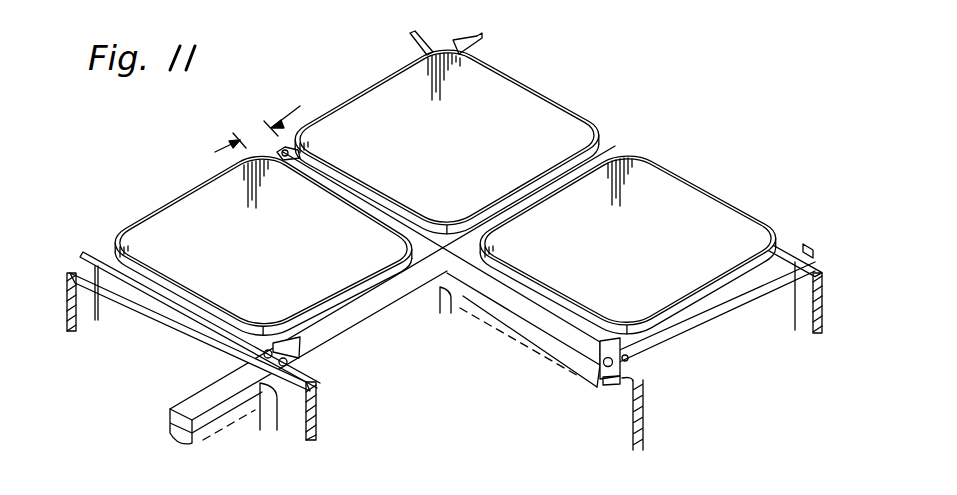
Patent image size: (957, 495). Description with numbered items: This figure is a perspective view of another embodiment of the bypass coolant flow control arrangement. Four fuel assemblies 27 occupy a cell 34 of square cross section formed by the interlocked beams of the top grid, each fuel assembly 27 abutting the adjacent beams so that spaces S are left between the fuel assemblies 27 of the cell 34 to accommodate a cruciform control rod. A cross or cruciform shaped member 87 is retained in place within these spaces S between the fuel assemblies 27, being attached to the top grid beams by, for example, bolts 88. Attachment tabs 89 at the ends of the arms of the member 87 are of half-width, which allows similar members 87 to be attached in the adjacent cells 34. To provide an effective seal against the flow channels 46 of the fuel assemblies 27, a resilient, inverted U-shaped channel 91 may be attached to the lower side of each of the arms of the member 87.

The fuel assembly 27 is at (462, 97).
The cell 34 is at (613, 101).
The flow channel 46 is at (680, 177).
The cruciform shaped member 87 is at (258, 390).
The bolt 88 is at (608, 340).
The attachment tab 89 is at (610, 386).
The inverted U-shaped channel 91 is at (545, 368).
The space S is at (257, 129).